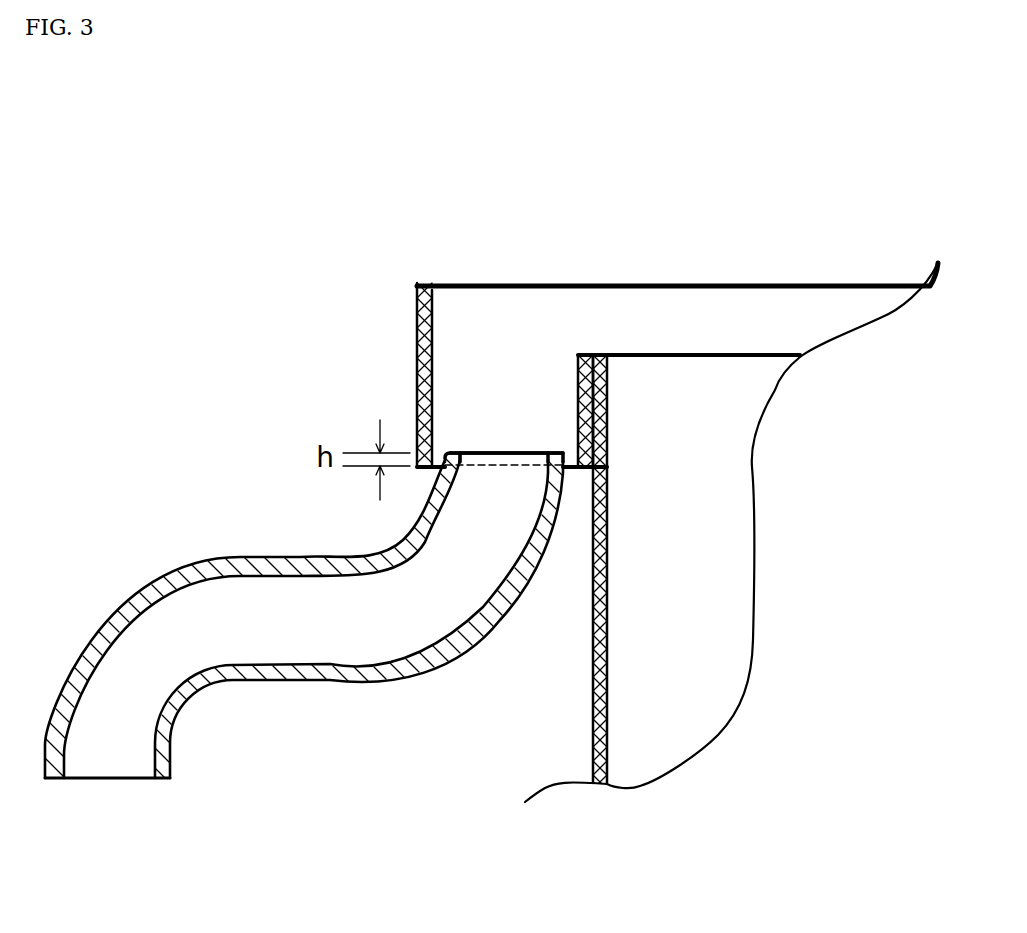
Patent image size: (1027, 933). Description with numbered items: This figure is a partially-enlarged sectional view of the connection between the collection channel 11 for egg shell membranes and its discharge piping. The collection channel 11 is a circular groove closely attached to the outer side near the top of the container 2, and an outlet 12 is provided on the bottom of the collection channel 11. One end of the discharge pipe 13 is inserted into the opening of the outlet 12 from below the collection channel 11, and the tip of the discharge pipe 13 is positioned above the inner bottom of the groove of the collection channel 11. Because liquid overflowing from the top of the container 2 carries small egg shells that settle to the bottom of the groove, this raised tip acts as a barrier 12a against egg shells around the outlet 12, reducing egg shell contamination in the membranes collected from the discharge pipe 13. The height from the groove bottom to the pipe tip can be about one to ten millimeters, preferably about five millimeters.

The container 2 is at (702, 680).
The collection channel 11 is at (483, 325).
The outlet 12 is at (503, 452).
The barrier 12a is at (452, 452).
The discharge pipe 13 is at (143, 595).